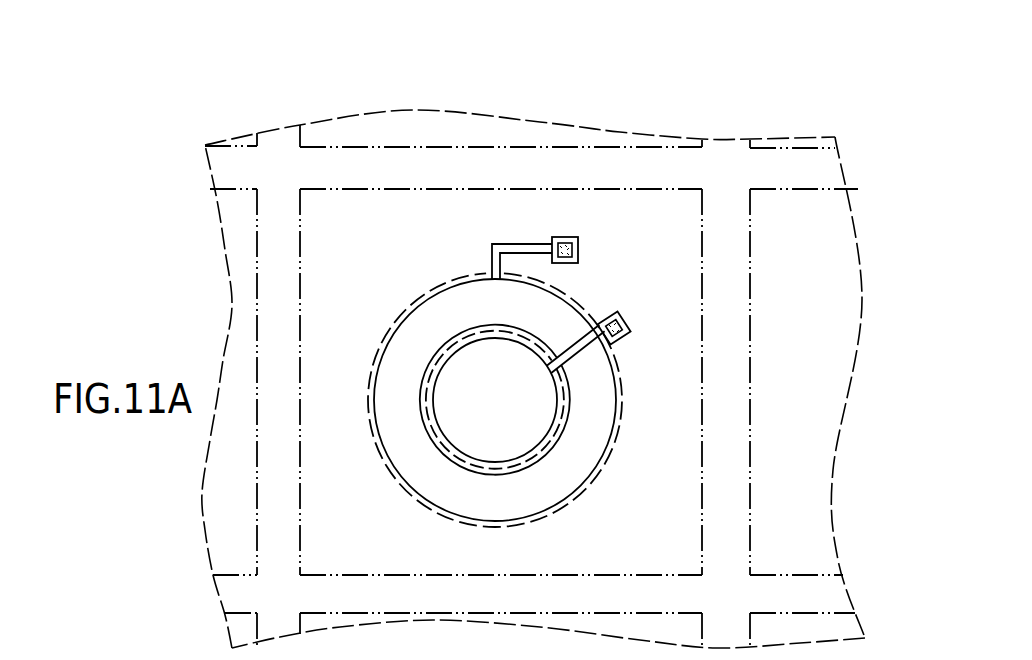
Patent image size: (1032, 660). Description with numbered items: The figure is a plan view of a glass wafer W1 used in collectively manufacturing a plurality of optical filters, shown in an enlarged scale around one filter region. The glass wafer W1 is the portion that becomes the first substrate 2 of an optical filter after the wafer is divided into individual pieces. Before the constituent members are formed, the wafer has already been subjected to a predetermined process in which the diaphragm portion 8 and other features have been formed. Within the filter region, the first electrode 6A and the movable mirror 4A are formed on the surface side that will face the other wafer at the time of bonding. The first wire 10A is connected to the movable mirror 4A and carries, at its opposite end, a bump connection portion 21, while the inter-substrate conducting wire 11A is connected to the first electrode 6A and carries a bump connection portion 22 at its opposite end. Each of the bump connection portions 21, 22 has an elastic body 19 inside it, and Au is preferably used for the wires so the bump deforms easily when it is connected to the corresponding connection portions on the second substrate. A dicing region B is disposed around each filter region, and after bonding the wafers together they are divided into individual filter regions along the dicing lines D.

The glass wafer W1 is at (232, 280).
The dicing region B is at (284, 538).
The dicing line D is at (702, 197).
The first substrate 2 is at (300, 462).
The diaphragm portion 8 is at (418, 300).
The first electrode 6A is at (447, 303).
The movable mirror 4A is at (443, 392).
The inter-substrate conducting wire 11A is at (502, 246).
The bump connection portion 22 is at (578, 252).
The first wire 10A is at (607, 348).
The bump connection portion 21 is at (632, 332).
The elastic body 19 is at (565, 237).